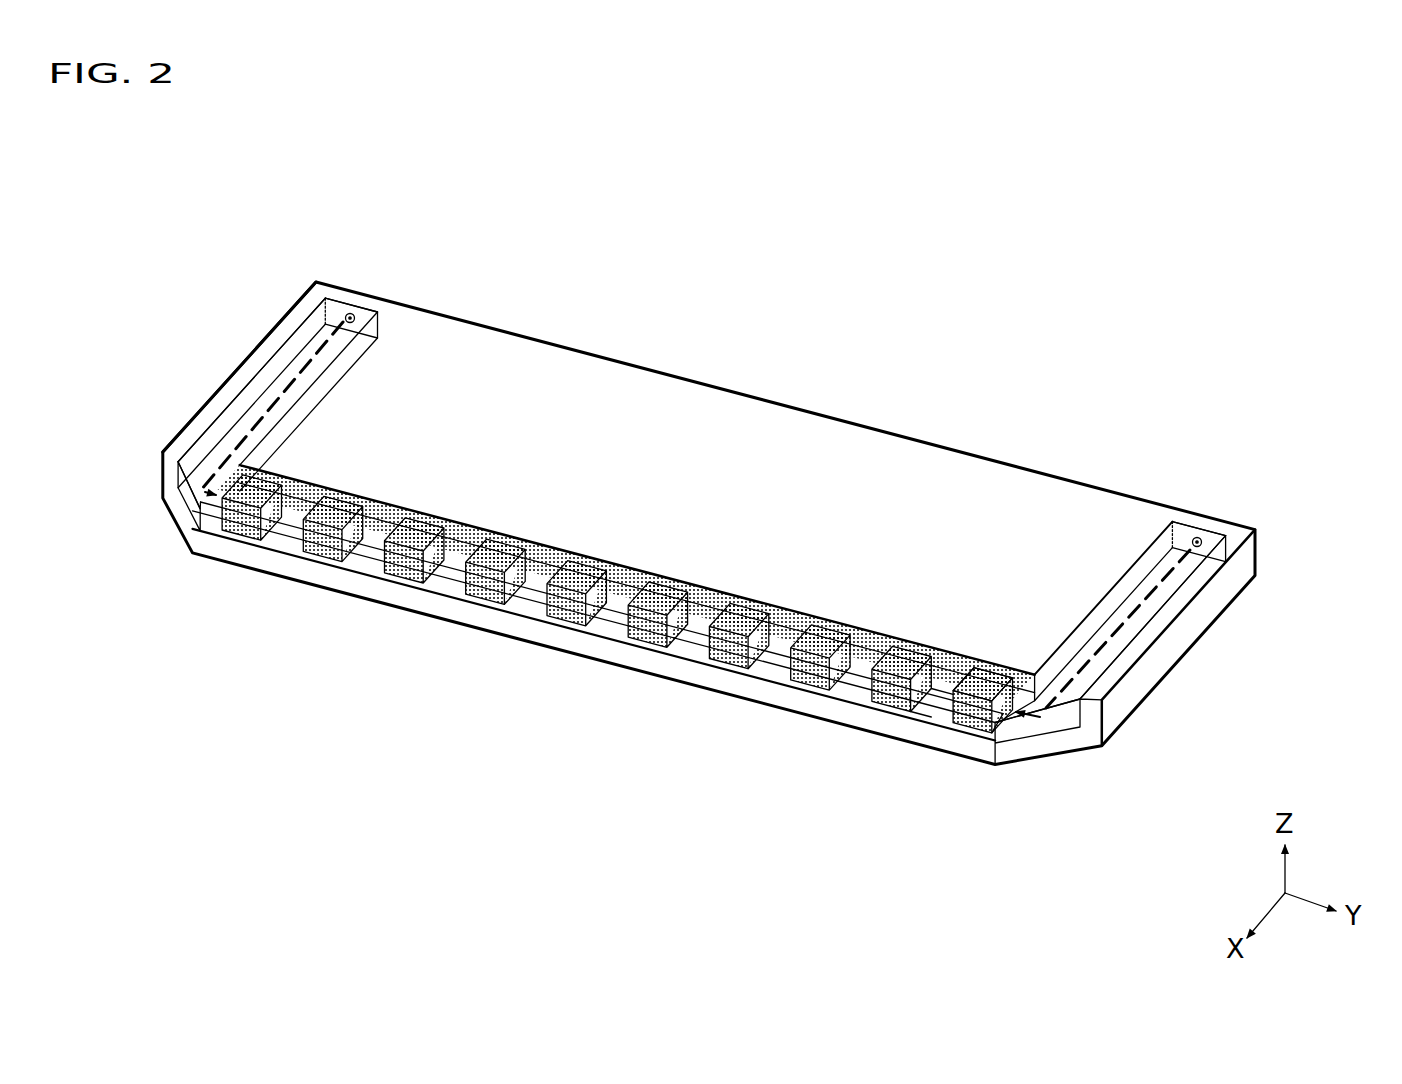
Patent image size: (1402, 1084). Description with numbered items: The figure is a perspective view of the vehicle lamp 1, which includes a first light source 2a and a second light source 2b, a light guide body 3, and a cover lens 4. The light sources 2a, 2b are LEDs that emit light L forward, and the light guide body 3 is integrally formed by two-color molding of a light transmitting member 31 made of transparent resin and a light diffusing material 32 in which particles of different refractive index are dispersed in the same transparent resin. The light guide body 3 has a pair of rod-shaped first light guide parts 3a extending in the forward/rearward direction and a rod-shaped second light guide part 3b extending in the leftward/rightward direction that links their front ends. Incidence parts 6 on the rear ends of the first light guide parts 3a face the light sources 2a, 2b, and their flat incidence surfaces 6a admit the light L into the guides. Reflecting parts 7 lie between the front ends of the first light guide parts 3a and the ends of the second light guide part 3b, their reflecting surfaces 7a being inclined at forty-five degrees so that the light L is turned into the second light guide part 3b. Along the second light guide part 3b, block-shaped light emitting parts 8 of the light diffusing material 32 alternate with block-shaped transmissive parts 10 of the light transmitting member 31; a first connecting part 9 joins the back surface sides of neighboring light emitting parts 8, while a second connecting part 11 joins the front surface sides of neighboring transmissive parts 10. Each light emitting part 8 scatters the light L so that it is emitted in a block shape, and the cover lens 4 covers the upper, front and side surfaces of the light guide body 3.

The vehicle lamp 1 is at (365, 154).
The first light source 2a is at (354, 314).
The second light source 2b is at (1200, 540).
The light guide body 3 is at (758, 588).
The first light guide part 3a is at (1224, 658).
The second light guide part 3b is at (610, 645).
The cover lens 4 is at (789, 476).
The incidence part 6 is at (775, 416).
The incidence surface 6a is at (1272, 557).
The reflecting part 7 is at (629, 592).
The reflecting surface 7a is at (193, 497).
The light emitting part 8 is at (878, 690).
The first connecting part 9 is at (948, 690).
The transmissive part 10 is at (850, 662).
The second connecting part 11 is at (898, 712).
The light transmitting member 31 is at (702, 498).
The light diffusing material 32 is at (563, 674).
The light L is at (258, 420).